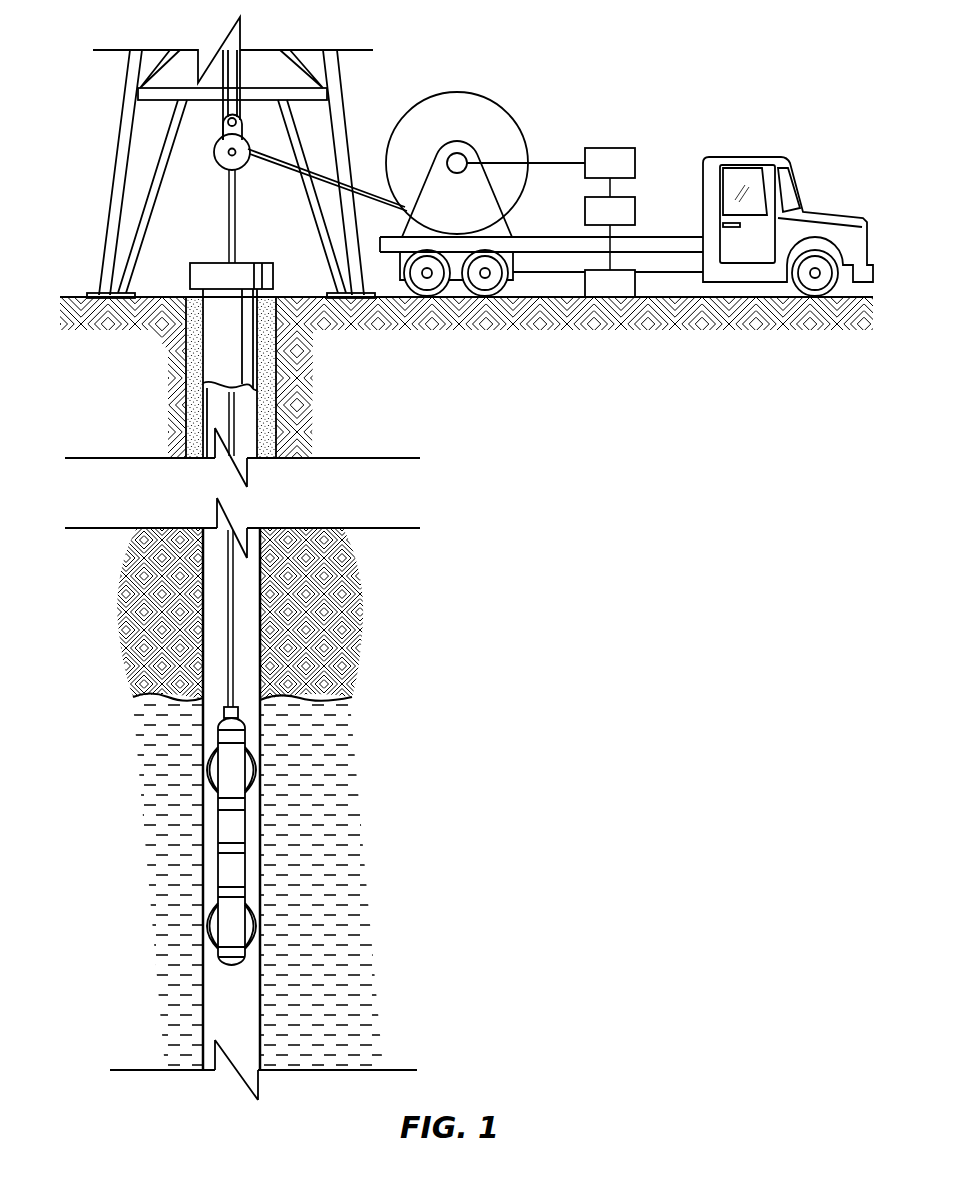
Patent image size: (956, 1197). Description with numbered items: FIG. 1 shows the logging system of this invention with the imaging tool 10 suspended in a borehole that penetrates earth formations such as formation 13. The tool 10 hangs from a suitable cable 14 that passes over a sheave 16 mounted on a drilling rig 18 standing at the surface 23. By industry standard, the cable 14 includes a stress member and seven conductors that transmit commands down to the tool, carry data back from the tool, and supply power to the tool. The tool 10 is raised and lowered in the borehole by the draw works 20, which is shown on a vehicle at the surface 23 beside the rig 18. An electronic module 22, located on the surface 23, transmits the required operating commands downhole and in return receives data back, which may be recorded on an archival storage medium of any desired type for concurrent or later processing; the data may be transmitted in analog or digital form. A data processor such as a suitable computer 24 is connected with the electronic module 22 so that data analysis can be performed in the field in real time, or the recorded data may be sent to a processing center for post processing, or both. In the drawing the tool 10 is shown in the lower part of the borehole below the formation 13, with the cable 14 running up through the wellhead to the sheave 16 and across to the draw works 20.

The imaging tool 10 is at (247, 830).
The earth formation 13 is at (392, 652).
The cable 14 is at (228, 247).
The sheave 16 is at (213, 152).
The drilling rig 18 is at (120, 100).
The draw works 20 is at (456, 92).
The electronic module 22 is at (623, 148).
The surface 23 is at (73, 297).
The computer 24 is at (617, 197).